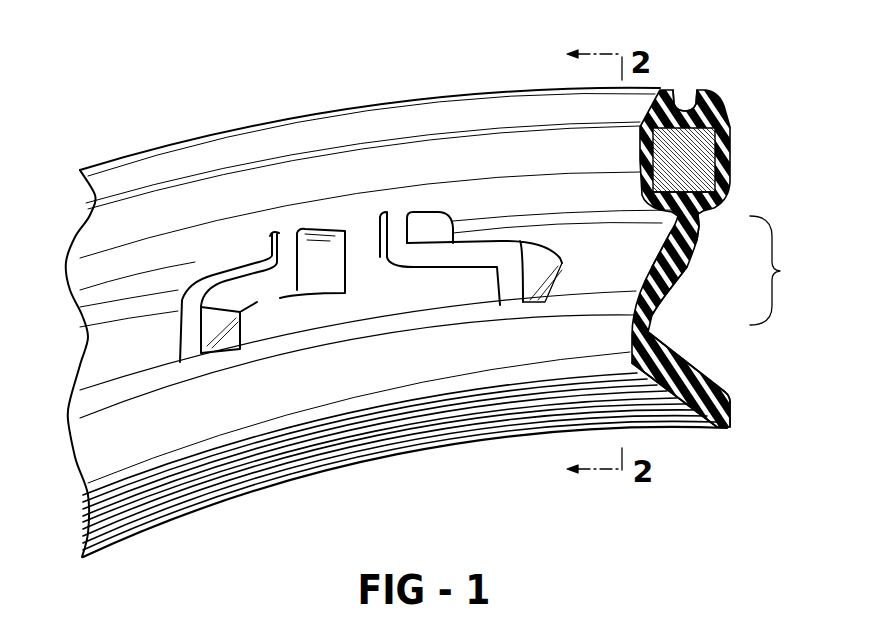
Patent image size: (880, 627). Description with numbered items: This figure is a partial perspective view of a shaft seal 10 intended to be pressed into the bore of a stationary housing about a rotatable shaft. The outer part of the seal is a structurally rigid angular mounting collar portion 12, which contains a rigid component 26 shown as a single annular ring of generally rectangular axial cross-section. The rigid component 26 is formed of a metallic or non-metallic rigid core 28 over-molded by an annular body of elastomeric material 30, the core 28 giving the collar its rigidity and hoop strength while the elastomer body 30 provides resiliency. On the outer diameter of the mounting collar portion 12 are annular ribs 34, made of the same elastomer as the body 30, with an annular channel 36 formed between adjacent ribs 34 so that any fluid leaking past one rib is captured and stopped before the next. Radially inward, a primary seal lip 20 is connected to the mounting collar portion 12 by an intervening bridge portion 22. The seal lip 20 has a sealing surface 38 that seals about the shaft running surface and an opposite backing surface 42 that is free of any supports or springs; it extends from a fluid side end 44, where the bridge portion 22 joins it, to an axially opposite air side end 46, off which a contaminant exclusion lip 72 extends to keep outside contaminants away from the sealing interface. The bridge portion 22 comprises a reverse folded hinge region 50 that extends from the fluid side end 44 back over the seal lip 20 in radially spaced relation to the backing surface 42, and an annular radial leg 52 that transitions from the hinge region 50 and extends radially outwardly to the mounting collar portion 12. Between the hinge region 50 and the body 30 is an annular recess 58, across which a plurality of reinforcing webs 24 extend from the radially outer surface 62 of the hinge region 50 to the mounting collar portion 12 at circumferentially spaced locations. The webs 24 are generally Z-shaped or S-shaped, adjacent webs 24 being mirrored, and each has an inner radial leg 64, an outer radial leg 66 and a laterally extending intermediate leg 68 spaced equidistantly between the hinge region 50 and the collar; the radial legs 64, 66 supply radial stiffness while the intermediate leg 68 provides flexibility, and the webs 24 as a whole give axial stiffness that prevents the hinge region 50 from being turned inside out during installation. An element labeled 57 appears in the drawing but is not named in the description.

The shaft seal 10 is at (380, 78).
The mounting collar portion 12 is at (236, 110).
The primary seal lip 20 is at (710, 386).
The bridge portion 22 is at (783, 270).
The reinforcing webs 24 is at (212, 272).
The rigid component 26 is at (698, 156).
The rigid core 28 is at (693, 173).
The body of elastomeric material 30 is at (722, 108).
The annular ribs 34 is at (660, 89).
The annular channel 36 is at (683, 100).
The sealing surface 38 is at (432, 440).
The backing surface 42 is at (695, 368).
The fluid side end 44 is at (535, 354).
The air side end 46 is at (723, 403).
The hinge region 50 is at (660, 301).
The annular radial leg 52 is at (696, 222).
The web bend 57 is at (657, 331).
The annular recess 58 is at (663, 245).
The radially outer surface 62 is at (115, 358).
The inner radial leg 64 is at (182, 342).
The outer radial leg 66 is at (272, 250).
The intermediate leg 68 is at (257, 303).
The contaminant exclusion lip 72 is at (703, 430).